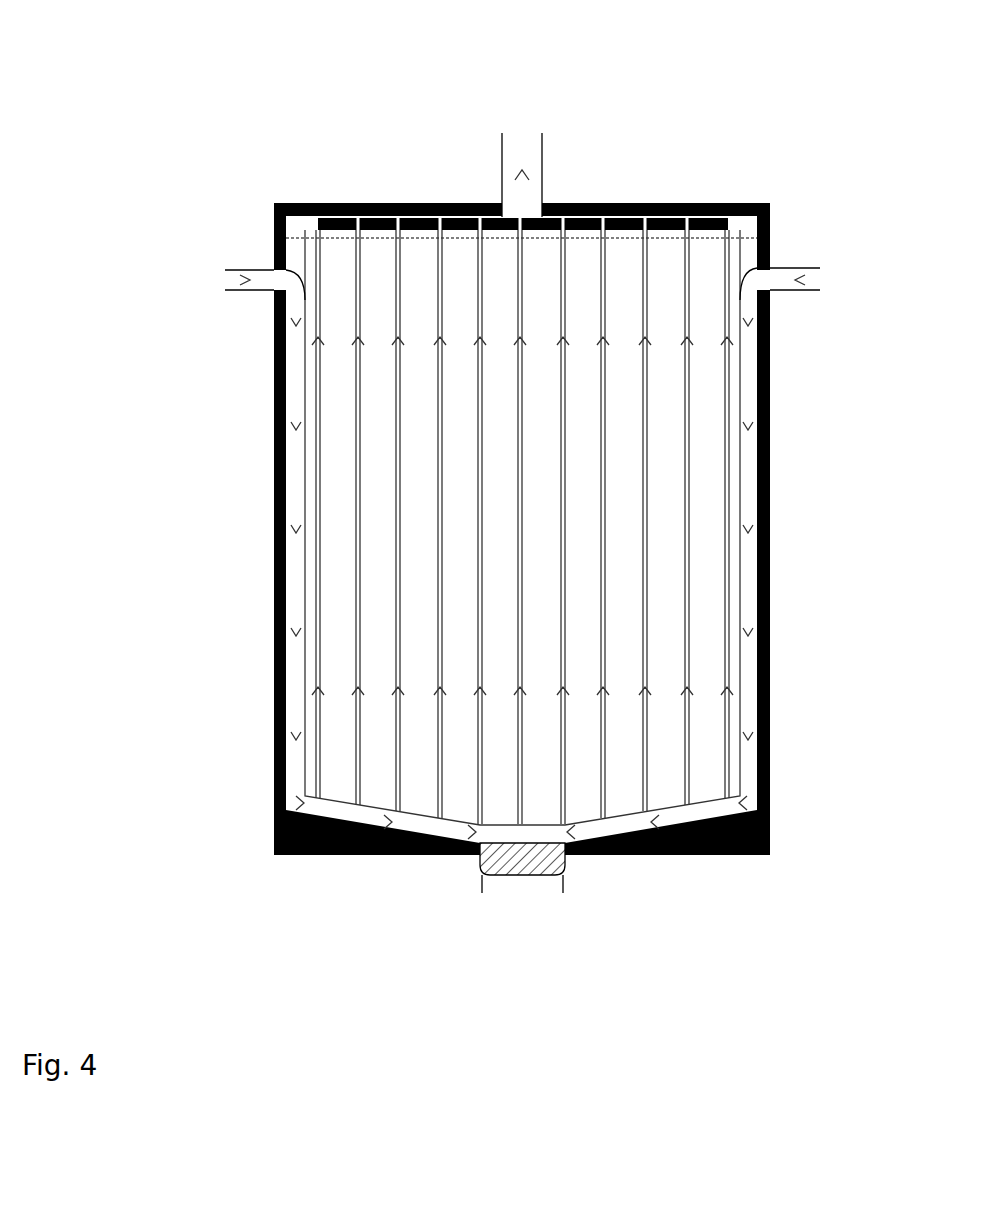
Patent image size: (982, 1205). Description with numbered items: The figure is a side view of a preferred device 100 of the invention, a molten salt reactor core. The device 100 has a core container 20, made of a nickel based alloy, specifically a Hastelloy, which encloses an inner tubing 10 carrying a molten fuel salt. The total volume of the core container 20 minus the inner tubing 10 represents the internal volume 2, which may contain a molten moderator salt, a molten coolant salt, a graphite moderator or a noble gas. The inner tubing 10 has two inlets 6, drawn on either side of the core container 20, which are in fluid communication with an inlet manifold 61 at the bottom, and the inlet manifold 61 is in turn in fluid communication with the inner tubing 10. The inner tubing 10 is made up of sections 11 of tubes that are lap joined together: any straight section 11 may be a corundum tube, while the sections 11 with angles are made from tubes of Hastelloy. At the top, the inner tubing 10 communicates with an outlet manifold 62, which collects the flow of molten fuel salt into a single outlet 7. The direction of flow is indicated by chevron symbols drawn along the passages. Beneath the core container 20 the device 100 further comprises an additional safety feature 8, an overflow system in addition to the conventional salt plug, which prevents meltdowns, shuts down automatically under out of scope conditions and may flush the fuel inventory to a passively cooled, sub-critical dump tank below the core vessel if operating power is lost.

The device 100 is at (352, 152).
The core container 20 is at (337, 856).
The outlet manifold 62 is at (634, 203).
The inlet manifold 61 is at (630, 856).
The inner tubing 10 is at (728, 253).
The sections of tubes 11 is at (358, 493).
The internal volume 2 is at (522, 578).
The inlets 6 is at (520, 270).
The outlet 7 is at (522, 172).
The additional safety feature 8 is at (522, 878).